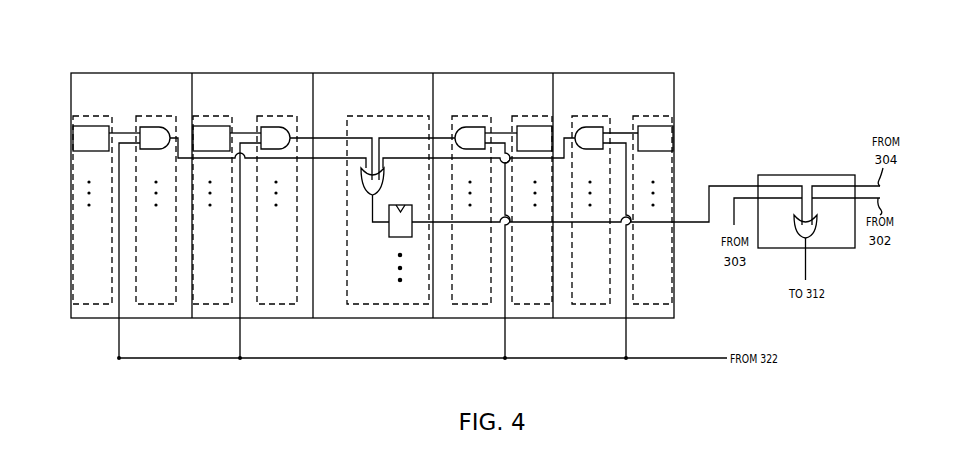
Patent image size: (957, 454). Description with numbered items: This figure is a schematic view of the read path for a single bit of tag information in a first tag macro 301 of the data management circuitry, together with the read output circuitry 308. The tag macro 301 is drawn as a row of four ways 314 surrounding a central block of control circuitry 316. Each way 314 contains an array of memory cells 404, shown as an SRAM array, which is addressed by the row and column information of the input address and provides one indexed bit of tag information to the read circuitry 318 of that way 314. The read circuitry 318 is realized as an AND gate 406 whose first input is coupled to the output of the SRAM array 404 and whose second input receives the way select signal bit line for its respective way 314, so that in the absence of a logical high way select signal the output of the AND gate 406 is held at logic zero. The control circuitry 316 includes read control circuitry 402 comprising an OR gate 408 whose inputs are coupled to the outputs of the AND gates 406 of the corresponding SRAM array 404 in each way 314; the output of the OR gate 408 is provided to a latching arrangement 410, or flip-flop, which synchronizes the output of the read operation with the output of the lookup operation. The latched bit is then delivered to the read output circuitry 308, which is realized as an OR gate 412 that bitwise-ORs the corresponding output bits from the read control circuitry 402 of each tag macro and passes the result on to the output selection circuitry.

The tag macro 301 is at (118, 73).
The way 314 is at (71, 101).
The control circuitry 316 is at (405, 73).
The read circuitry 318 is at (153, 304).
The read control circuitry 402 is at (379, 304).
The array of memory cells 404 is at (92, 116).
The AND gate 406 is at (163, 116).
The OR gate 408 is at (385, 188).
The latching arrangement 410 is at (389, 237).
The read output circuitry 308 is at (838, 248).
The OR gate 412 is at (797, 236).